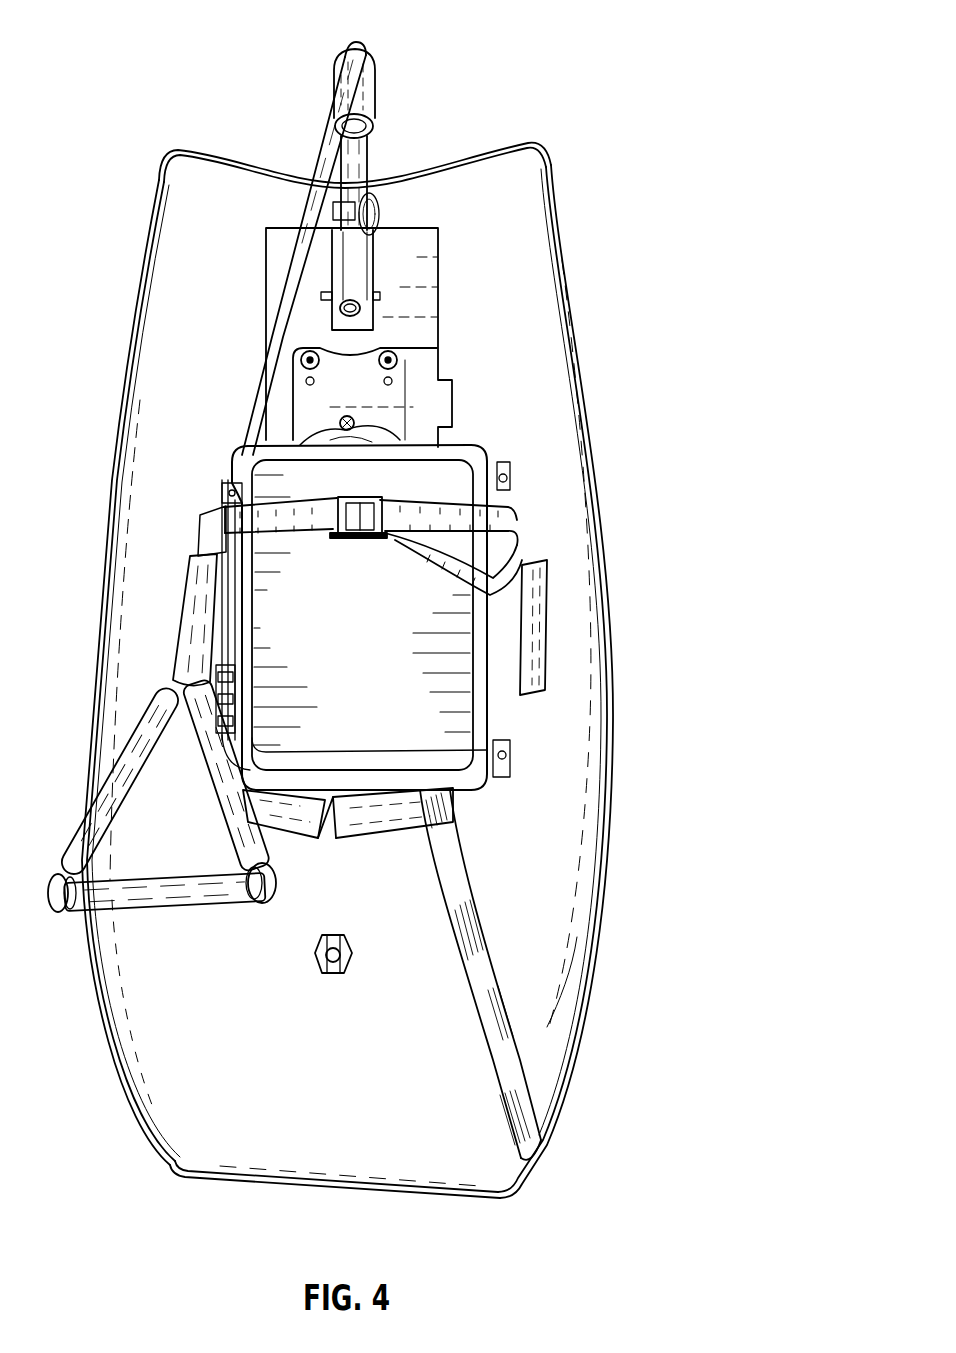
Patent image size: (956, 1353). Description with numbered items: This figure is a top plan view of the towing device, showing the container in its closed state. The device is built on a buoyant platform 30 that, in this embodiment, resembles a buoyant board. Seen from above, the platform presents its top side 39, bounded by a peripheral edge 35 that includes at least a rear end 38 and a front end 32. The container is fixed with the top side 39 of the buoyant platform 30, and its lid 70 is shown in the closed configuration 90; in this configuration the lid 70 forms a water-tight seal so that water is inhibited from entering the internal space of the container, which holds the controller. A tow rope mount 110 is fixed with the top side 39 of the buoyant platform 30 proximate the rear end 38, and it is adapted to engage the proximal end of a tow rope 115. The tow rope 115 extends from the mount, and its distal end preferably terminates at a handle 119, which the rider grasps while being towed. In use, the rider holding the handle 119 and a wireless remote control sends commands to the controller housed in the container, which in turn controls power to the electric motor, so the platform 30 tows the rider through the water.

The buoyant platform 30 is at (587, 56).
The front end 32 is at (276, 1183).
The peripheral edge 35 is at (587, 398).
The rear end 38 is at (275, 172).
The top side 39 is at (484, 183).
The lid 70 is at (454, 617).
The closed configuration 90 is at (453, 602).
The tow rope mount 110 is at (335, 275).
The tow rope 115 is at (284, 318).
The handle 119 is at (193, 908).